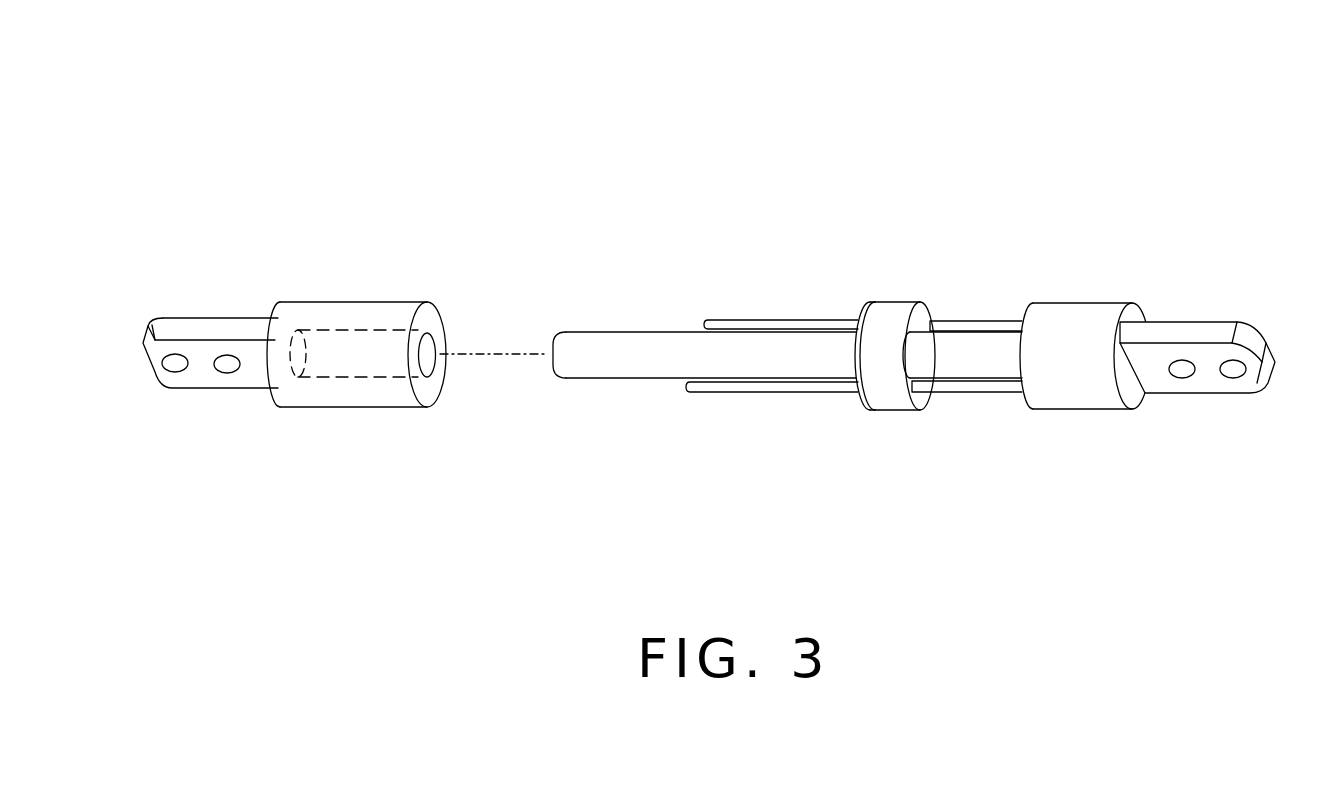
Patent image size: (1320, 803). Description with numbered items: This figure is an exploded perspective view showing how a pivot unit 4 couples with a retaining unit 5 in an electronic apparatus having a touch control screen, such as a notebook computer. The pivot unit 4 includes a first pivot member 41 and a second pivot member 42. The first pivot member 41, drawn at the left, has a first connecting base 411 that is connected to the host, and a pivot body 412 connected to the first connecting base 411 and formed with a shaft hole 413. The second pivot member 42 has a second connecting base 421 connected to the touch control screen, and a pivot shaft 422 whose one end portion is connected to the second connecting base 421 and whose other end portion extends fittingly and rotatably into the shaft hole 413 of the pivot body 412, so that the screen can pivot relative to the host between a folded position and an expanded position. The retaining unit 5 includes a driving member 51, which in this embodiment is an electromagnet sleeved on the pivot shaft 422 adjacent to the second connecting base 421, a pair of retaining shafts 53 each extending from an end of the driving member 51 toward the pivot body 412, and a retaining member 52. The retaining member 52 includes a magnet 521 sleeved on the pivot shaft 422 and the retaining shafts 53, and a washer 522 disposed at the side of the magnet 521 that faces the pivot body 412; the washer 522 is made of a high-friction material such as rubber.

The pivot unit 4 is at (765, 145).
The first pivot member 41 is at (302, 277).
The first connecting base 411 is at (198, 352).
The pivot body 412 is at (350, 315).
The shaft hole 413 is at (365, 362).
The second pivot member 42 is at (1187, 280).
The second connecting base 421 is at (1200, 393).
The pivot shaft 422 is at (600, 352).
The retaining unit 5 is at (893, 255).
The driving member 51 is at (1080, 400).
The retaining member 52 is at (885, 425).
The magnet 521 is at (897, 400).
The washer 522 is at (855, 403).
The retaining shaft 53 is at (733, 325).